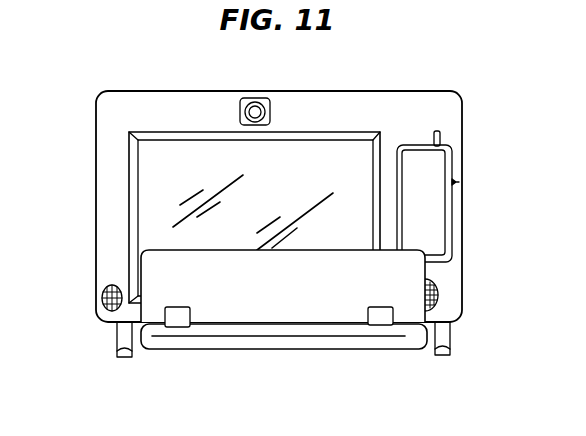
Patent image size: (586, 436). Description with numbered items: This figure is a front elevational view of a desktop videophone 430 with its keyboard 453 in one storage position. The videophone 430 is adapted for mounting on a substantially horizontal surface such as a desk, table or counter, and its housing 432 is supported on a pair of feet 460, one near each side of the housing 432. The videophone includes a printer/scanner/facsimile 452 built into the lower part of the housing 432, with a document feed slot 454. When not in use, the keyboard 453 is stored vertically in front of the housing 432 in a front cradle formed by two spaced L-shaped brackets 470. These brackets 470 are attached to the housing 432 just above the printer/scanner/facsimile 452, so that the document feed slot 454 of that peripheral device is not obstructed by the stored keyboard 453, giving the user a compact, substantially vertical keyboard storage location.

The videophone 430 is at (163, 58).
The housing 432 is at (446, 105).
The printer/scanner/facsimile 452 is at (287, 342).
The keyboard 453 is at (160, 264).
The document feed slot 454 is at (232, 338).
The feet 460 is at (118, 336).
The L-shaped brackets 470 is at (176, 320).